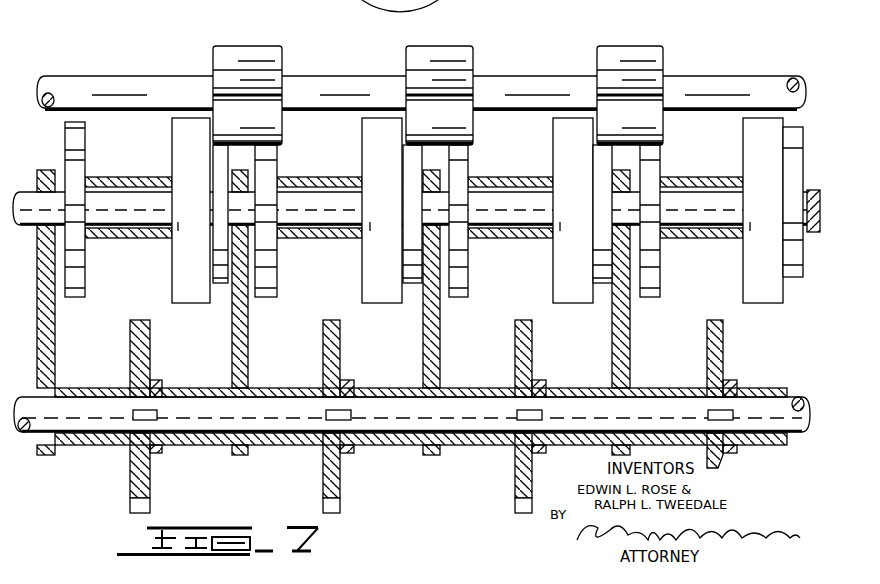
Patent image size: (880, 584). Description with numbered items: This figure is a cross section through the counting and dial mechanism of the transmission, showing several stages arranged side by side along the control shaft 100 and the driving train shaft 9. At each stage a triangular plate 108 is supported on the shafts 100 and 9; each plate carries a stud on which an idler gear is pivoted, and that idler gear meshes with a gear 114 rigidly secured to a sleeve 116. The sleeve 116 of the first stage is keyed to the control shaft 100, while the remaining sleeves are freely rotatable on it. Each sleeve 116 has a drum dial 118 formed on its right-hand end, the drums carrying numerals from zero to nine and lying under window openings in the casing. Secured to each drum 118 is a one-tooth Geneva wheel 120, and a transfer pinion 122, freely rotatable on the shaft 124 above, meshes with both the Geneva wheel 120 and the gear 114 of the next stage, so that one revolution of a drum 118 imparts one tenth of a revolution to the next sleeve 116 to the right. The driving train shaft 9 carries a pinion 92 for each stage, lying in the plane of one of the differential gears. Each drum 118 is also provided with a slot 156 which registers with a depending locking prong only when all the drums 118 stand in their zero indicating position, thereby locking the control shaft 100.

The driving train shaft 9 is at (745, 405).
The pinion 92 is at (132, 507).
The control shaft 100 is at (314, 196).
The triangular plate 108 is at (50, 343).
The gear 114 is at (78, 157).
The sleeve 116 is at (135, 238).
The drum dial 118 is at (175, 276).
The one-tooth Geneva wheel 120 is at (222, 286).
The transfer pinion 122 is at (238, 52).
The shaft 124 is at (326, 80).
The slot 156 is at (180, 227).